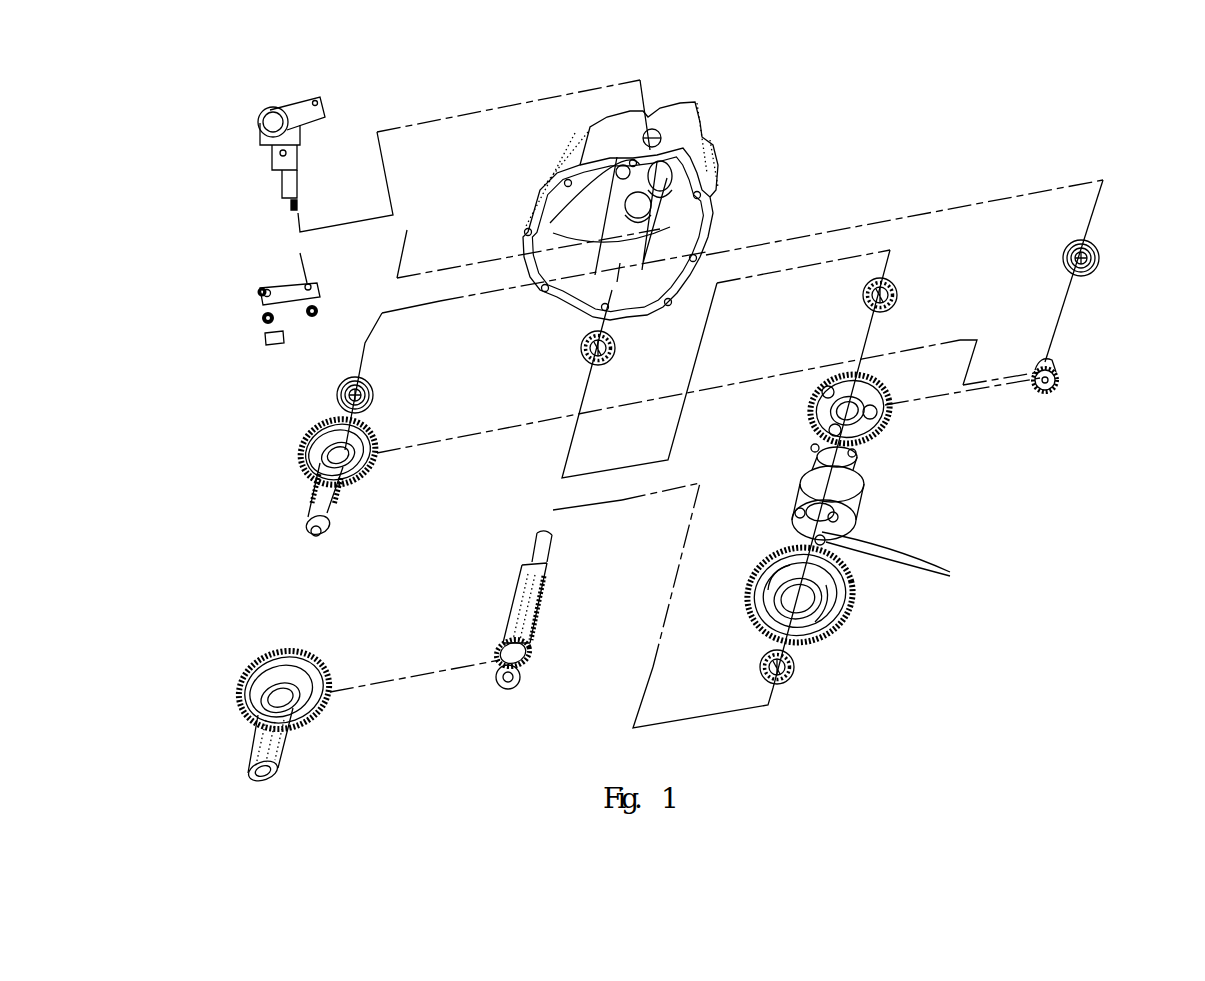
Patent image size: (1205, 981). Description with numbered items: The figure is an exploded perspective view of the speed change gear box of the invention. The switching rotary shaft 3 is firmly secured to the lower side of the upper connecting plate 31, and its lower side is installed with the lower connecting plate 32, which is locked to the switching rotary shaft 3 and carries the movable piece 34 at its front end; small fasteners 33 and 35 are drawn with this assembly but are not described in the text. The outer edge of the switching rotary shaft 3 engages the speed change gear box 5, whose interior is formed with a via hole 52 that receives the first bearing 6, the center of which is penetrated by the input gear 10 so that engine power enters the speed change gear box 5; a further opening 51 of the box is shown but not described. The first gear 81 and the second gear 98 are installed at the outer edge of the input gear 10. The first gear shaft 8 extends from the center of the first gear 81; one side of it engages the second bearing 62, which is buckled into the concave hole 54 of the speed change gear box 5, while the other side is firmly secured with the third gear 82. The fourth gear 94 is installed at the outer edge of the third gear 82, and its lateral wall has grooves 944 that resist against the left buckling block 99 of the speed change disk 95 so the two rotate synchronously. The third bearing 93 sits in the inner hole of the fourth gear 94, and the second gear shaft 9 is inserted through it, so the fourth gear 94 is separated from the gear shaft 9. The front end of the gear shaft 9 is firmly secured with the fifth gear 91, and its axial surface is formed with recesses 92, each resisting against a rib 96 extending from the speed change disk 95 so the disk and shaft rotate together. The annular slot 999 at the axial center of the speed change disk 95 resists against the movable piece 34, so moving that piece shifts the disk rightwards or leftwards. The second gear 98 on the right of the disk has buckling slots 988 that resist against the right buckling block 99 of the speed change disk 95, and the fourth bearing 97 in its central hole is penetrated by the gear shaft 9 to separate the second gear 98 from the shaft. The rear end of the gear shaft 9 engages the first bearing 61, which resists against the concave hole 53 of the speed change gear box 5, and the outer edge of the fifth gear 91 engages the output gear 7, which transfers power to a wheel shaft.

The switching rotary shaft 3 is at (251, 141).
The upper connecting plate 31 is at (293, 110).
The lower connecting plate 32 is at (317, 282).
The screw 33 is at (317, 315).
The movable piece 34 is at (272, 347).
The screw 35 is at (260, 290).
The speed change gear box 5 is at (636, 207).
The hole 51 is at (652, 140).
The via hole 52 is at (668, 195).
The concave hole 53 is at (638, 207).
The concave hole 54 is at (623, 172).
The first bearing 6 is at (1100, 252).
The first bearing 61 is at (587, 337).
The second bearing 62 is at (373, 380).
The output gear 7 is at (330, 693).
The first gear shaft 8 is at (343, 492).
The first gear 81 is at (377, 457).
The third gear 82 is at (342, 495).
The second gear shaft 9 is at (531, 601).
The fifth gear 91 is at (493, 652).
The recesses 92 is at (540, 612).
The third bearing 93 is at (795, 657).
The fourth gear 94 is at (860, 605).
The grooves 944 is at (840, 600).
The speed change disk 95 is at (850, 480).
The rib 96 is at (897, 560).
The fourth bearing 97 is at (893, 280).
The second gear 98 is at (802, 377).
The buckling slots 988 is at (823, 433).
The buckling block 99 is at (810, 513).
The annular slot 999 is at (853, 480).
The input gear 10 is at (1063, 378).